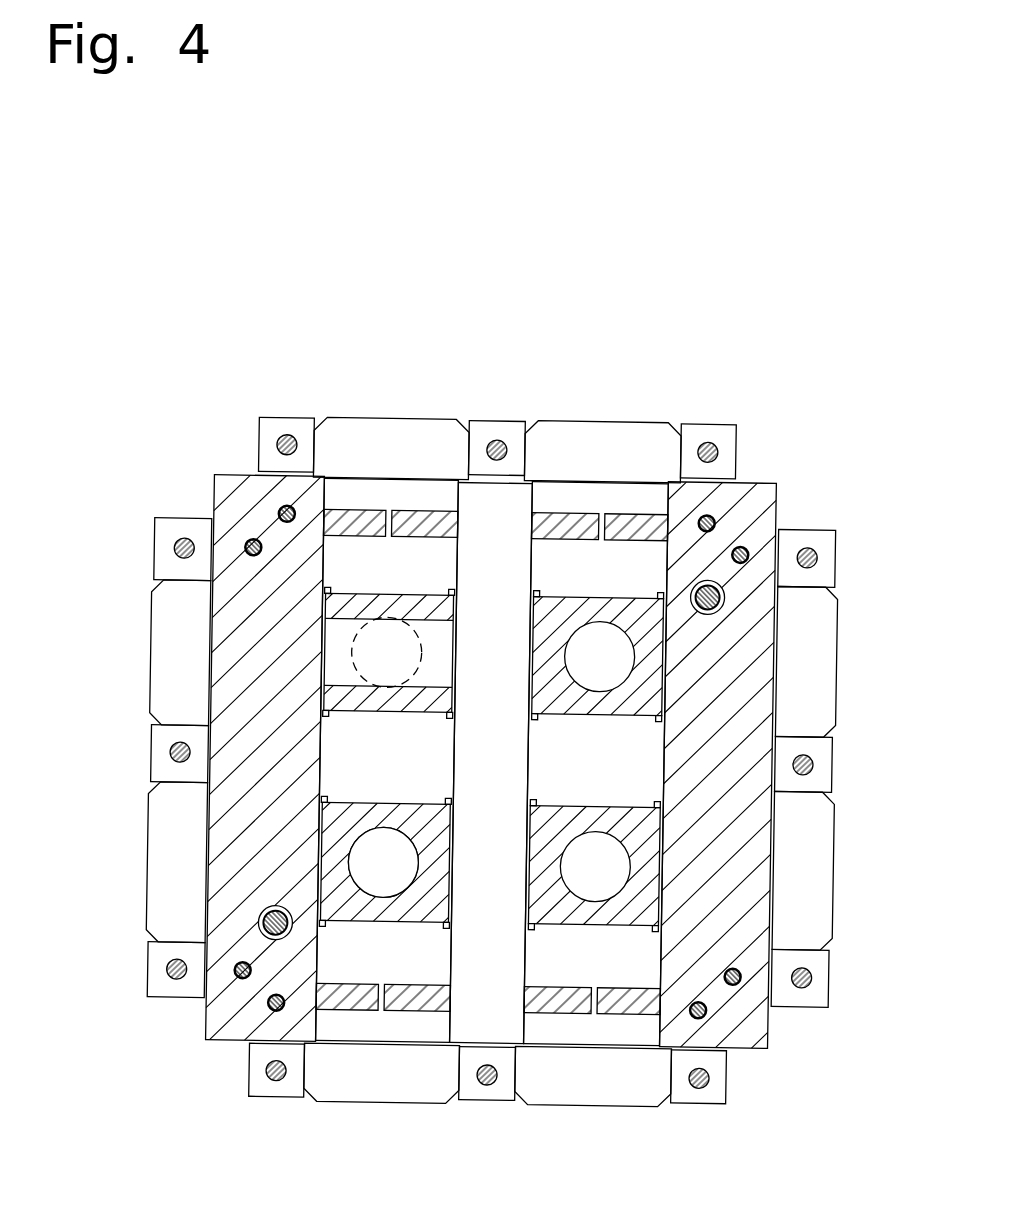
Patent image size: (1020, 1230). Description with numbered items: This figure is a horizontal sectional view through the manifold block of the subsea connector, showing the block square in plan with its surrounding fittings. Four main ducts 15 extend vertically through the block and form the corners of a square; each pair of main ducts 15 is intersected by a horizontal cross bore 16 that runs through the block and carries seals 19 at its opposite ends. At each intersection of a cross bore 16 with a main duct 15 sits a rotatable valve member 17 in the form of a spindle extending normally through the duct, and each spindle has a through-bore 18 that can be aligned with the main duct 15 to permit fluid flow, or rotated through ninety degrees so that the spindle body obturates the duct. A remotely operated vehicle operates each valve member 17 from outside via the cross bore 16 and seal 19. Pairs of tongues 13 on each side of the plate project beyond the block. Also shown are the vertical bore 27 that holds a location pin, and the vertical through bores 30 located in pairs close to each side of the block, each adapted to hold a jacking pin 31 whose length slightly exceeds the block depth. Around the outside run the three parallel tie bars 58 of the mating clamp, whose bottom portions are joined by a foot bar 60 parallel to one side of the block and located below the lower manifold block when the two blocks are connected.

The tongue 13 is at (588, 679).
The main duct 15 is at (341, 630).
The cross bore 16 is at (792, 749).
The rotatable valve member 17 is at (257, 825).
The through-bore 18 is at (259, 702).
The seal 19 is at (381, 1083).
The vertical bore 27 is at (491, 739).
The vertical through bore 30 is at (536, 769).
The jacking pin 31 is at (487, 727).
The tie bar 58 is at (486, 1117).
The foot bar 60 is at (486, 1116).